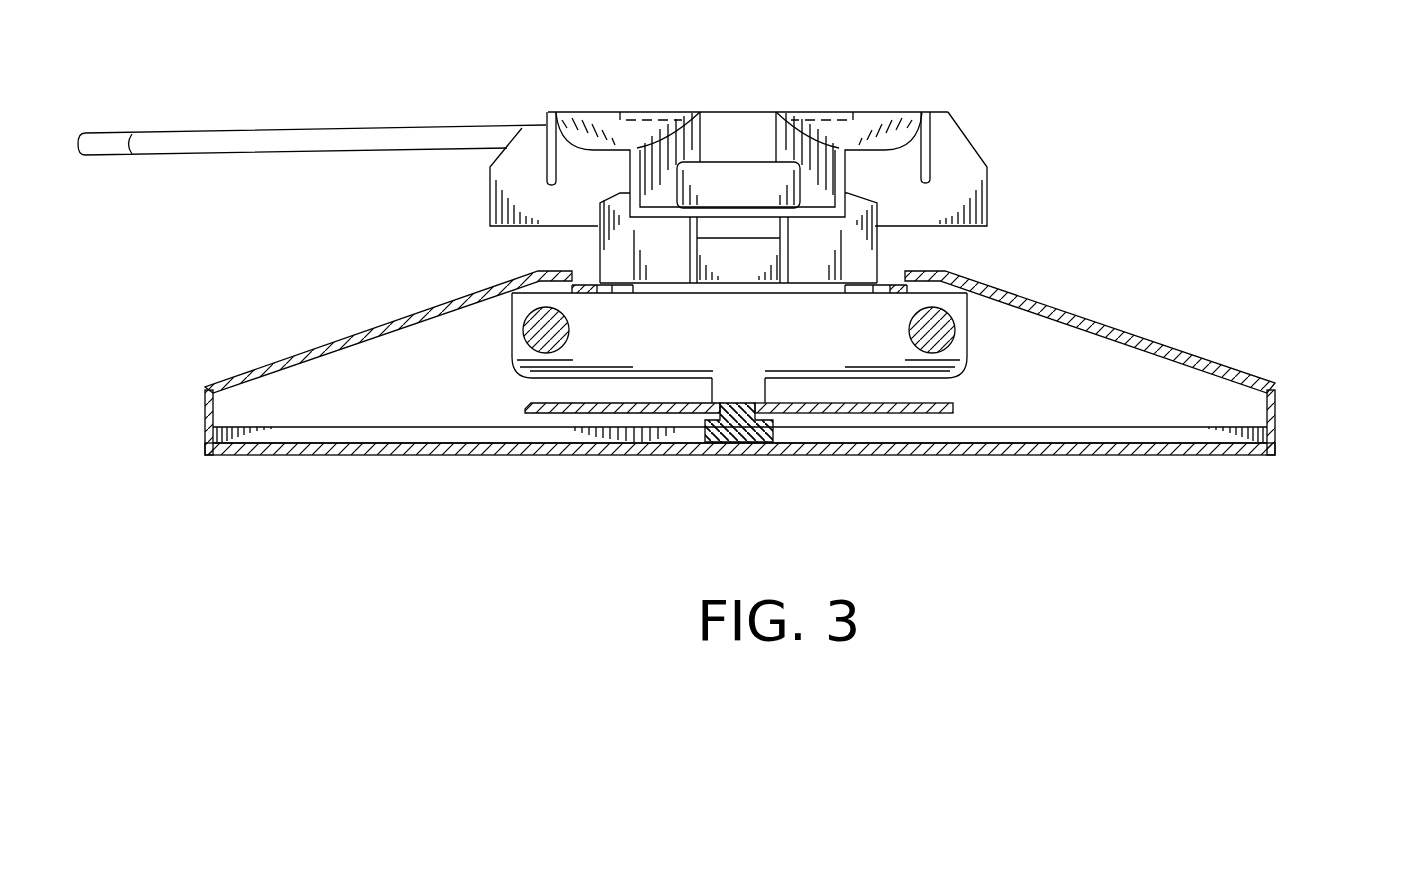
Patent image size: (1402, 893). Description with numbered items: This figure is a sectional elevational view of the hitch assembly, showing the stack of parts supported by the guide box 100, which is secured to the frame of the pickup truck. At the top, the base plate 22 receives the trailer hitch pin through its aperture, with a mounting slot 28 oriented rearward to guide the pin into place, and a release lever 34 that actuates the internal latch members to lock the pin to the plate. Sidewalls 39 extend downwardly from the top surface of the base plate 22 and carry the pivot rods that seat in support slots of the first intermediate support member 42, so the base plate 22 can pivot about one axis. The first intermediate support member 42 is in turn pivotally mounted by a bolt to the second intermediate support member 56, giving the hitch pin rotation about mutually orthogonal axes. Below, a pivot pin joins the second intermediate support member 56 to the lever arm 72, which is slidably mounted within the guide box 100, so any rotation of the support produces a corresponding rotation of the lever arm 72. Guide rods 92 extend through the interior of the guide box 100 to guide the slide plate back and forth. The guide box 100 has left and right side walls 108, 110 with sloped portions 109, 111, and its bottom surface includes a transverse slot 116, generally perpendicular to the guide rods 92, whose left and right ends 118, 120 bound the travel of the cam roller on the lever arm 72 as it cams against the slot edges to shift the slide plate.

The base plate 22 is at (880, 104).
The mounting slot 28 is at (686, 137).
The release lever 34 is at (258, 129).
The sidewalls 39 is at (546, 133).
The first intermediate support member 42 is at (995, 182).
The second intermediate support member 56 is at (886, 261).
The lever arm 72 is at (527, 404).
The guide rods 92 is at (572, 338).
The guide box 100 is at (736, 394).
The left side wall 108 is at (205, 398).
The sloped portion 109 is at (370, 321).
The right side wall 110 is at (1278, 398).
The sloped portion 111 is at (1120, 328).
The transverse slot 116 is at (818, 441).
The left end 118 is at (233, 427).
The right end 120 is at (1230, 427).